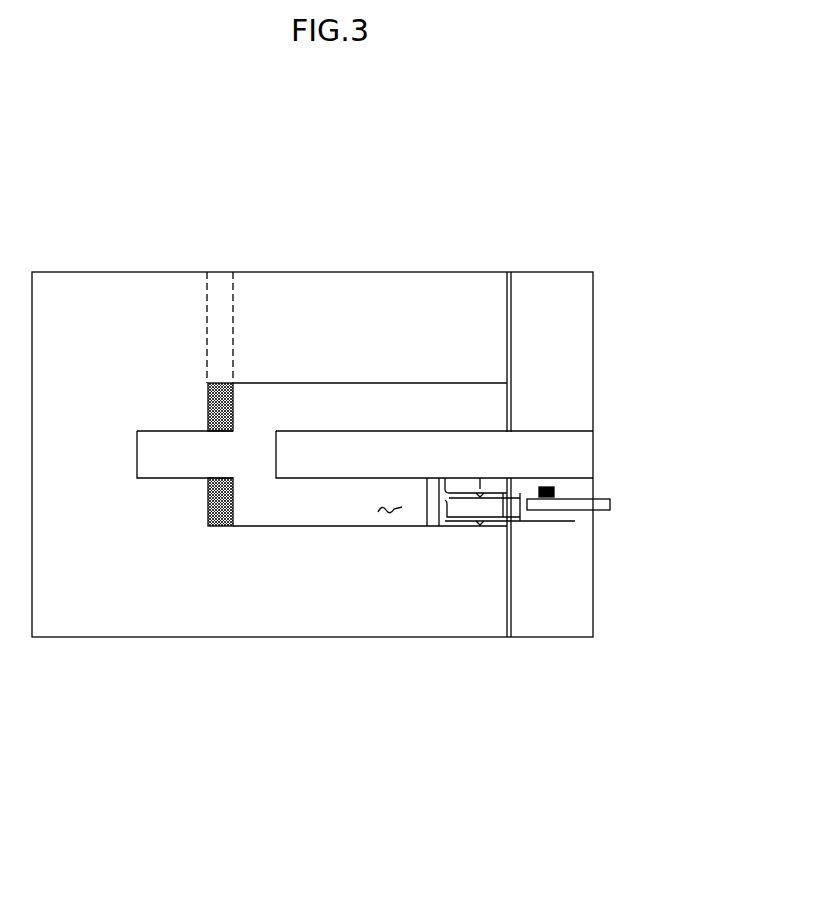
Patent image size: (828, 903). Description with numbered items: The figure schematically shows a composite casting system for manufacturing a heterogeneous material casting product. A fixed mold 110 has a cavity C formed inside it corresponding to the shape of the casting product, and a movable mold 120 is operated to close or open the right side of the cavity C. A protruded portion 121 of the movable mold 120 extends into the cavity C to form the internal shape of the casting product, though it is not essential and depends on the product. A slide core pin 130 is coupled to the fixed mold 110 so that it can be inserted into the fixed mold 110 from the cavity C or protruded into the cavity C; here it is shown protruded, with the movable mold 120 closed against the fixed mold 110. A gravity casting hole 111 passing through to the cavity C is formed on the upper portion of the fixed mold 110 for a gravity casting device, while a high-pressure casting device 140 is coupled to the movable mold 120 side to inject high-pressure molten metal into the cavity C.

The fixed mold 110 is at (349, 612).
The gravity casting hole 111 is at (216, 284).
The movable mold 120 is at (557, 330).
The protruded portion 121 is at (375, 445).
The slide core pin 130 is at (236, 394).
The high-pressure casting device 140 is at (585, 515).
The cavity C is at (392, 514).